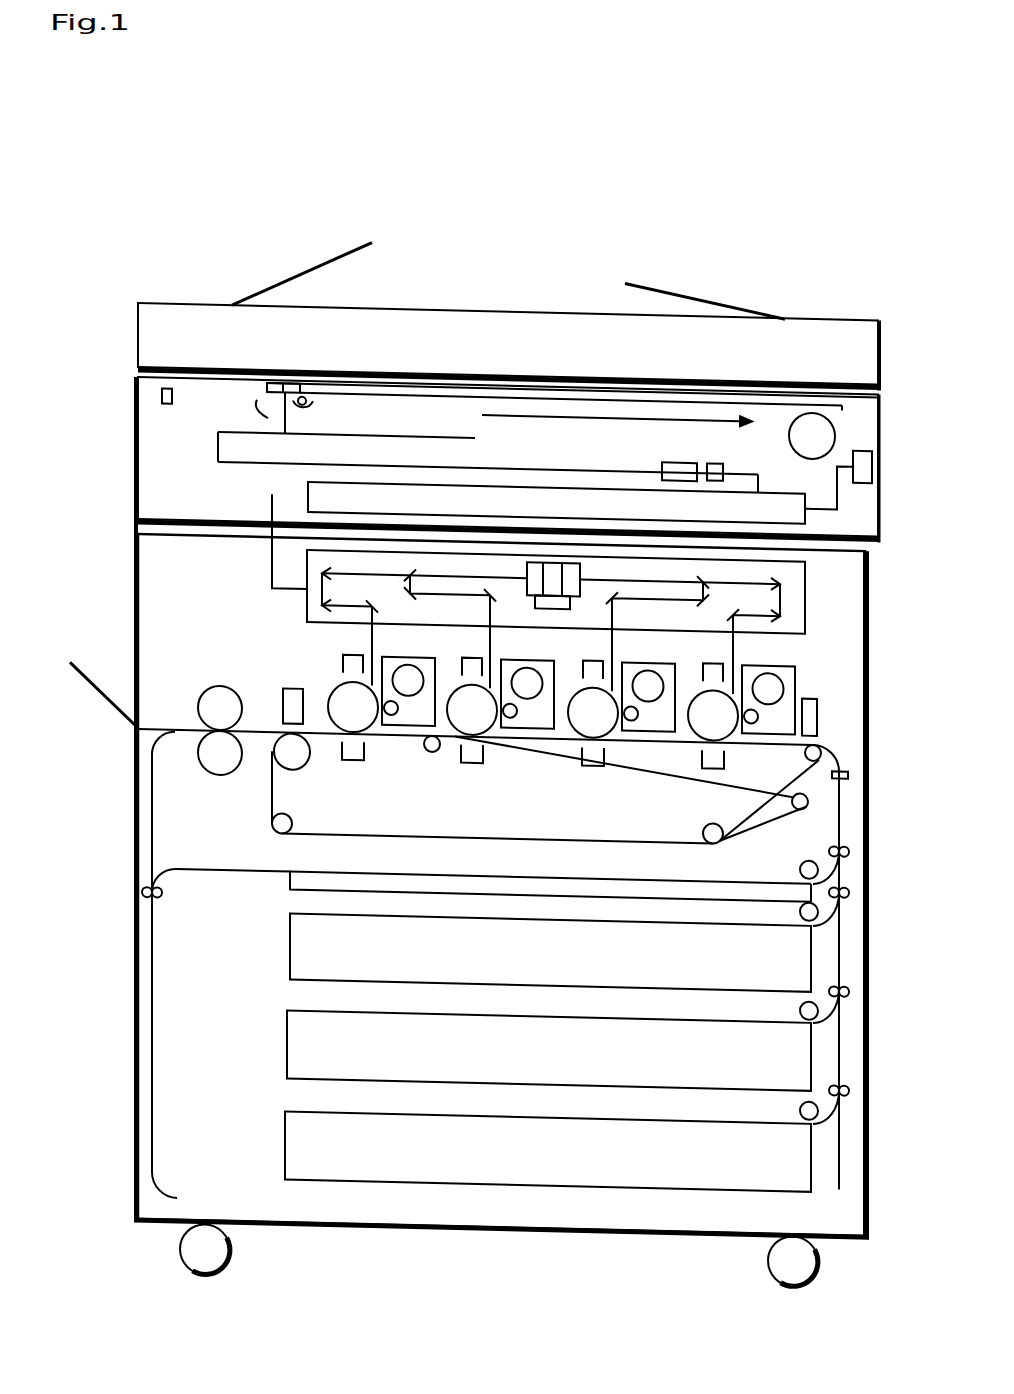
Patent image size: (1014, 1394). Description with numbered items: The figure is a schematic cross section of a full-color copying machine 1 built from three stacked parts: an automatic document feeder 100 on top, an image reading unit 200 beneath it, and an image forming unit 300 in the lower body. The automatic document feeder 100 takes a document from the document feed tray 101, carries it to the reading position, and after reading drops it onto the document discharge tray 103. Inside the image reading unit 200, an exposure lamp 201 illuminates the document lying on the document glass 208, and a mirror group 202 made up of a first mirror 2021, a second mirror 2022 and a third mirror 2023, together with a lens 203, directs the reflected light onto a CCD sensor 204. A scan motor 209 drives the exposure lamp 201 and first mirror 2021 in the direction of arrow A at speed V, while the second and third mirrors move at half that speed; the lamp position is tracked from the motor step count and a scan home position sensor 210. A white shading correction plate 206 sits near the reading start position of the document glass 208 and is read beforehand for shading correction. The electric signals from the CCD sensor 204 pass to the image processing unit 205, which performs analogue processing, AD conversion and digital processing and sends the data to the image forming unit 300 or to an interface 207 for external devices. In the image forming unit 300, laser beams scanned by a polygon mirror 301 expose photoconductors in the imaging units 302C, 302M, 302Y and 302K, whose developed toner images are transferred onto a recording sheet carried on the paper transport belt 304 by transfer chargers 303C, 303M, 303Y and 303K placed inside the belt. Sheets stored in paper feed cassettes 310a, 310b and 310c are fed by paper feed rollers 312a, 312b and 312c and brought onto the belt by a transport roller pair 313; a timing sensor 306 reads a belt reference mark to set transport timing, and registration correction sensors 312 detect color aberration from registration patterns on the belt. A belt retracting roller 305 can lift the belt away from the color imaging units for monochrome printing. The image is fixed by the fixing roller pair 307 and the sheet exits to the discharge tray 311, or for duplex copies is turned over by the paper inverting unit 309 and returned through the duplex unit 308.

The copying machine 1 is at (468, 720).
The automatic document feeder 100 is at (509, 297).
The document feed tray 101 is at (290, 274).
The document discharge tray 103 is at (680, 281).
The image reading unit 200 is at (130, 460).
The exposure lamp 201 is at (310, 403).
The mirror group 202 is at (467, 458).
The first mirror 2021 is at (287, 429).
The second mirror 2022 is at (222, 421).
The third mirror 2023 is at (215, 461).
The lens 203 is at (682, 450).
The CCD sensor 204 is at (710, 450).
The image processing unit 205 is at (577, 506).
The white shading correction plate 206 is at (275, 377).
The interface 207 is at (860, 467).
The document glass 208 is at (445, 390).
The scan motor 209 is at (783, 481).
The scan home position sensor 210 is at (167, 403).
The image forming unit 300 is at (130, 610).
The polygon mirror 301 is at (575, 551).
The imaging unit for black 302K is at (393, 652).
The imaging unit for yellow 302Y is at (507, 652).
The imaging unit for magenta 302M is at (623, 651).
The imaging unit for cyan 302C is at (752, 650).
The transfer charger for black 303K is at (350, 755).
The transfer charger for yellow 303Y is at (473, 756).
The transfer charger for magenta 303M is at (592, 753).
The transfer charger for cyan 303C is at (712, 752).
The paper transport belt 304 is at (262, 727).
The belt retracting roller 305 is at (793, 773).
The timing sensor 306 is at (817, 695).
The fixing roller pair 307 is at (218, 773).
The duplex unit 308 is at (289, 879).
The paper inverting unit 309 is at (154, 1009).
The paper feed cassette 310a is at (519, 934).
The paper feed cassette 310b is at (519, 1032).
The paper feed cassette 310c is at (519, 1133).
The discharge tray 311 is at (100, 686).
The registration correction sensors 312 is at (295, 682).
The paper feed roller 312a is at (801, 901).
The paper feed roller 312b is at (801, 1002).
The paper feed roller 312c is at (801, 1103).
The transport roller pair 313 is at (830, 859).